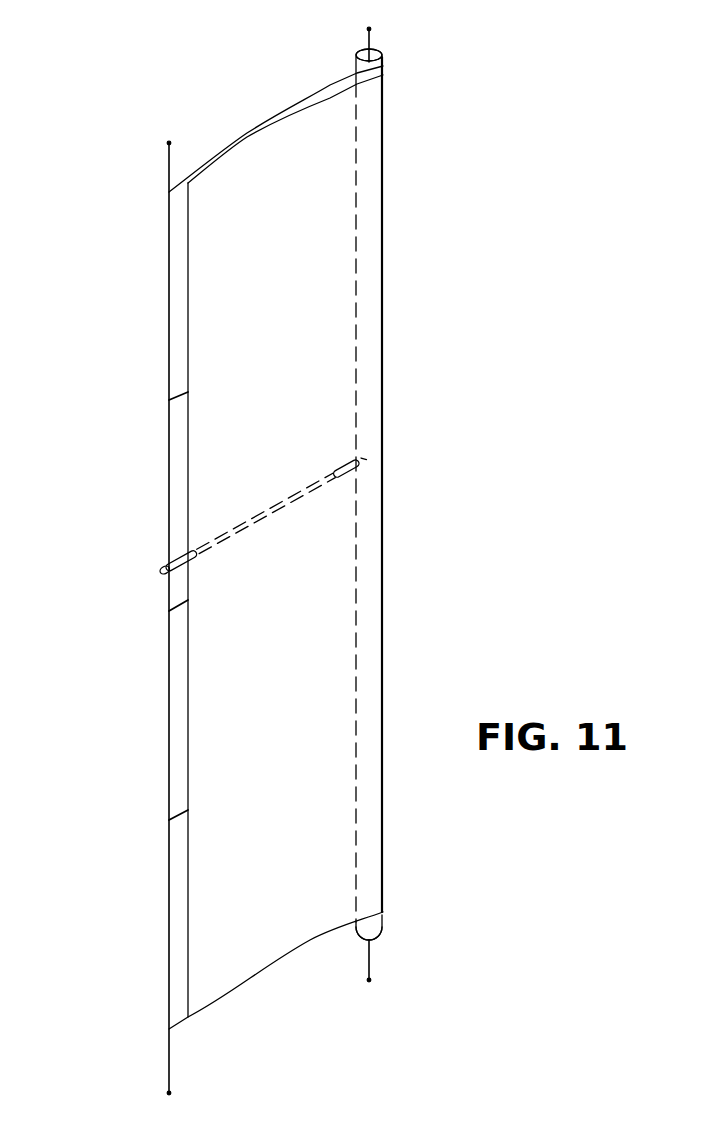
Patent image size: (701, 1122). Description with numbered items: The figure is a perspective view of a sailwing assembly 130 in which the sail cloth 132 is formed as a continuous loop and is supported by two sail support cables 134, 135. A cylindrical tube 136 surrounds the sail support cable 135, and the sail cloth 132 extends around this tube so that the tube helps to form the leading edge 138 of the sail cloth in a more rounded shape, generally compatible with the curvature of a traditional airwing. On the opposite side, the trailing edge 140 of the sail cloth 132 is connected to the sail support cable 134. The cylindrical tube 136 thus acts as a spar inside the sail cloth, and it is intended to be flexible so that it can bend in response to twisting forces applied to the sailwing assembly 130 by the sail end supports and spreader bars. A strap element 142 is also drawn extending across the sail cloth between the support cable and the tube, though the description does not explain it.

The sailwing assembly 130 is at (396, 633).
The sail cloth 132 is at (323, 250).
The sail support cable 134 is at (168, 167).
The sail support cable 135 is at (372, 50).
The cylindrical tube 136 is at (371, 74).
The leading edge 138 is at (385, 397).
The trailing edge 140 is at (187, 500).
The strap 142 is at (285, 500).